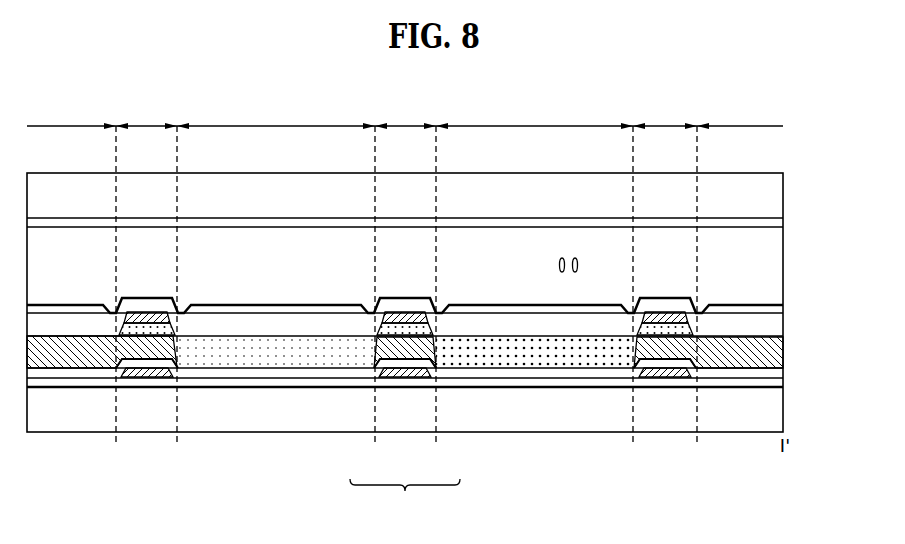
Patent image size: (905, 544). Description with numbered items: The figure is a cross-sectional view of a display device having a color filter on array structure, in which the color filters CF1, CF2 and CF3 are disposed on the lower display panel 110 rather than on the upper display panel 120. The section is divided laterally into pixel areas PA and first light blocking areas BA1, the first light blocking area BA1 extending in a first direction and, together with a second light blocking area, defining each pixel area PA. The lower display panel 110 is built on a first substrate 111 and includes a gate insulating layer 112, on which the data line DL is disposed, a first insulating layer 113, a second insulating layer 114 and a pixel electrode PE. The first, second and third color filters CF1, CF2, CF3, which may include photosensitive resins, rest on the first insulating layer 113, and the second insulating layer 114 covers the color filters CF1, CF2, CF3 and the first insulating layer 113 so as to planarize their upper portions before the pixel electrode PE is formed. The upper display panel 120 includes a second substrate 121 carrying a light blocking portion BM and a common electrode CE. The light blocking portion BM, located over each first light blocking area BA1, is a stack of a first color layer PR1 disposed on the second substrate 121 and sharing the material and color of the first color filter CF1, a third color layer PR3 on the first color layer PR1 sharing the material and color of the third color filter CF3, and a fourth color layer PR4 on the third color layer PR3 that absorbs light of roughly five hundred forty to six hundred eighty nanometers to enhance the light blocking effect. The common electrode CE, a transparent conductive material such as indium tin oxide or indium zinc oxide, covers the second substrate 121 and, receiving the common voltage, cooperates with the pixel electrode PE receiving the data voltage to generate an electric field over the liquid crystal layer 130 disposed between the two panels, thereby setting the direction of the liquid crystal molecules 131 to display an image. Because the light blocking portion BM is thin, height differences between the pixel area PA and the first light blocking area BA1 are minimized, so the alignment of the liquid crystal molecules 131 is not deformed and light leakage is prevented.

The pixel area PA is at (405, 113).
The first light blocking area BA1 is at (406, 271).
The upper display panel 120 is at (797, 173).
The second substrate 121 is at (289, 190).
The common electrode CE is at (488, 222).
The liquid crystal layer 130 is at (797, 229).
The liquid crystal molecules 131 is at (562, 257).
The lower display panel 110 is at (797, 306).
The first substrate 111 is at (270, 412).
The gate insulating layer 112 is at (305, 383).
The first insulating layer 113 is at (511, 380).
The second insulating layer 114 is at (600, 322).
The pixel electrode PE is at (199, 308).
The data line DL is at (145, 377).
The first color filter CF1 is at (68, 355).
The second color filter CF2 is at (226, 356).
The third color filter CF3 is at (562, 356).
The first color layer PR1 is at (404, 330).
The third color layer PR3 is at (411, 320).
The fourth color layer PR4 is at (397, 322).
The light blocking portion BM is at (405, 500).